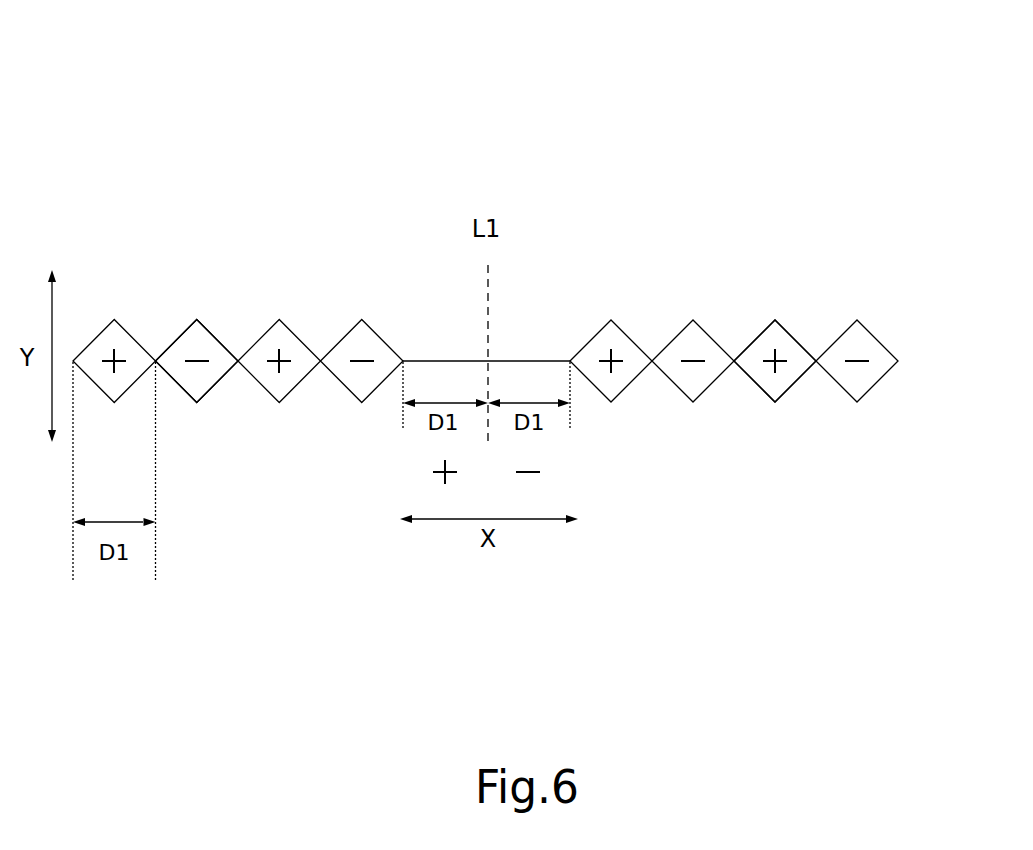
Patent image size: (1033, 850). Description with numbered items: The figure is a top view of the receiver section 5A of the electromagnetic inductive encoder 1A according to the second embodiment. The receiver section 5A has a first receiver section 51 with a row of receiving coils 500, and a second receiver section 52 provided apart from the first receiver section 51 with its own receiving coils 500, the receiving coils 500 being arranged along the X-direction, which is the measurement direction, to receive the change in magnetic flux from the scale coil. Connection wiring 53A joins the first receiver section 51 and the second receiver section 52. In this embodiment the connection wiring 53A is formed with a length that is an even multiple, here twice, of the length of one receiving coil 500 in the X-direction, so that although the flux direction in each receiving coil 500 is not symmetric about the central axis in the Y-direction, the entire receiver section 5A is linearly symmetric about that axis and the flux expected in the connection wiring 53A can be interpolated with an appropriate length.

The electromagnetic inductive encoder 1A is at (715, 98).
The receiver section 5A is at (822, 208).
The receiving coil 500 is at (228, 340).
The first receiver section 51 is at (398, 401).
The second receiver section 52 is at (903, 400).
The connection wiring 53A is at (531, 359).